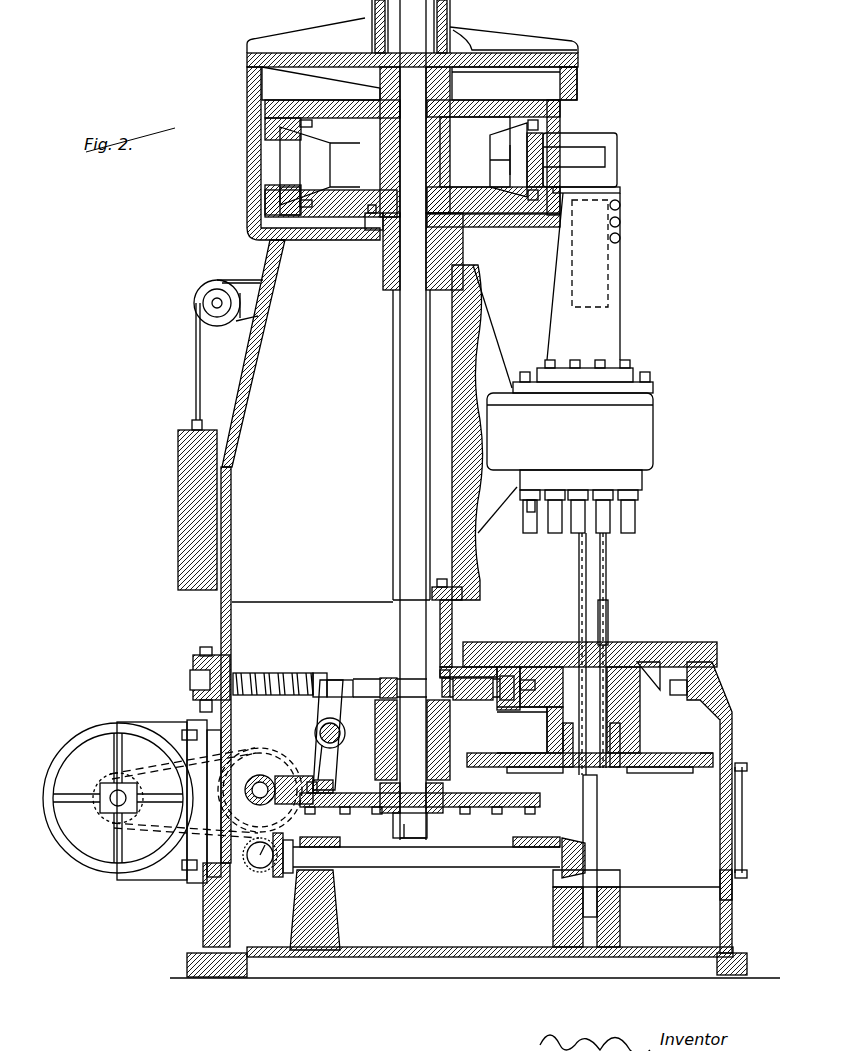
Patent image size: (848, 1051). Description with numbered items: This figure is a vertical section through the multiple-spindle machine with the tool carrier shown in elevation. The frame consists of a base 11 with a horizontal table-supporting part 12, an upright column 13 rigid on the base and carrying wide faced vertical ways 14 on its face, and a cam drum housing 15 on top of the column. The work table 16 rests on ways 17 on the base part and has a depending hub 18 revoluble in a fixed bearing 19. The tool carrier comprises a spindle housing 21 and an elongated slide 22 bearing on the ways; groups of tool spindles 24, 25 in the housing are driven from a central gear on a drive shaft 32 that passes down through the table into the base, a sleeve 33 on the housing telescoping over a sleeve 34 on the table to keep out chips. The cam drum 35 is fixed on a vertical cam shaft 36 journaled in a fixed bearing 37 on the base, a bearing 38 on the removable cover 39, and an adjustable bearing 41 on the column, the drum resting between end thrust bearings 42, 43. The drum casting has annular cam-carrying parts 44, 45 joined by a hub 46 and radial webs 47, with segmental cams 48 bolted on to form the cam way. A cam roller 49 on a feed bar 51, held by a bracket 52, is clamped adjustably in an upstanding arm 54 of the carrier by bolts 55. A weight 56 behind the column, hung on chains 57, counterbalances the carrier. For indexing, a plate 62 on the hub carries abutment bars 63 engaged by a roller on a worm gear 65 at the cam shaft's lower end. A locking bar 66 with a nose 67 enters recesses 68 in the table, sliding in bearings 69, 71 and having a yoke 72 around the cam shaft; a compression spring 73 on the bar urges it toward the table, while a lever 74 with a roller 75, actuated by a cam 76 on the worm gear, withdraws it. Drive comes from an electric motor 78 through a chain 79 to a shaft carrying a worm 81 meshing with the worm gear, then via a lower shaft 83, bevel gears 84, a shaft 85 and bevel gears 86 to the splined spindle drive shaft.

The base 11 is at (730, 922).
The horizontal table-supporting part 12 is at (712, 680).
The upright column 13 is at (307, 551).
The vertical ways 14 is at (430, 355).
The cam drum housing 15 is at (247, 87).
The work table 16 is at (700, 648).
The ways 17 is at (455, 660).
The depending hub 18 is at (618, 712).
The fixed bearing 19 is at (558, 716).
The spindle housing 21 is at (655, 405).
The elongated slide 22 is at (490, 362).
The tool spindles 24 is at (527, 512).
The tool spindles 25 is at (630, 522).
The drive shaft 32 is at (584, 572).
The sleeve 33 is at (607, 556).
The sleeve 34 is at (606, 628).
The cam drum 35 is at (560, 92).
The cam shaft 36 is at (400, 492).
The fixed bearing 37 is at (378, 750).
The bearing 38 is at (448, 40).
The removable cover 39 is at (500, 34).
The adjustable bearing 41 is at (385, 262).
The end thrust bearing 42 is at (400, 74).
The end thrust bearing 43 is at (400, 210).
The annular cam-carrying part 44 is at (318, 100).
The annular cam-carrying part 45 is at (318, 222).
The hub 46 is at (437, 148).
The radial webs 47 is at (335, 181).
The segmental cams 48 is at (272, 140).
The cam roller 49 is at (578, 145).
The feed bar 51 is at (602, 192).
The bracket 52 is at (592, 157).
The upstanding rigid arm 54 is at (620, 282).
The bolts 55 is at (620, 238).
The weight 56 is at (178, 491).
The chains 57 is at (196, 353).
The plate 62 is at (705, 770).
The abutment bars 63 is at (578, 770).
The worm gear 65 is at (480, 805).
The locking bar 66 is at (363, 680).
The nose 67 is at (508, 665).
The recesses 68 is at (525, 668).
The bearing 69 is at (472, 702).
The bearing 71 is at (195, 667).
The yoke 72 is at (437, 666).
The worm 73 is at (286, 673).
The lever 74 is at (322, 730).
The roller 75 is at (324, 768).
The cam 76 is at (333, 787).
The electric motor 78 is at (130, 732).
The chain 79 is at (240, 752).
The worm 81 is at (260, 775).
The lower shaft 83 is at (258, 860).
The bevel gears 84 is at (279, 878).
The shaft 85 is at (453, 858).
The bevel gears 86 is at (590, 850).